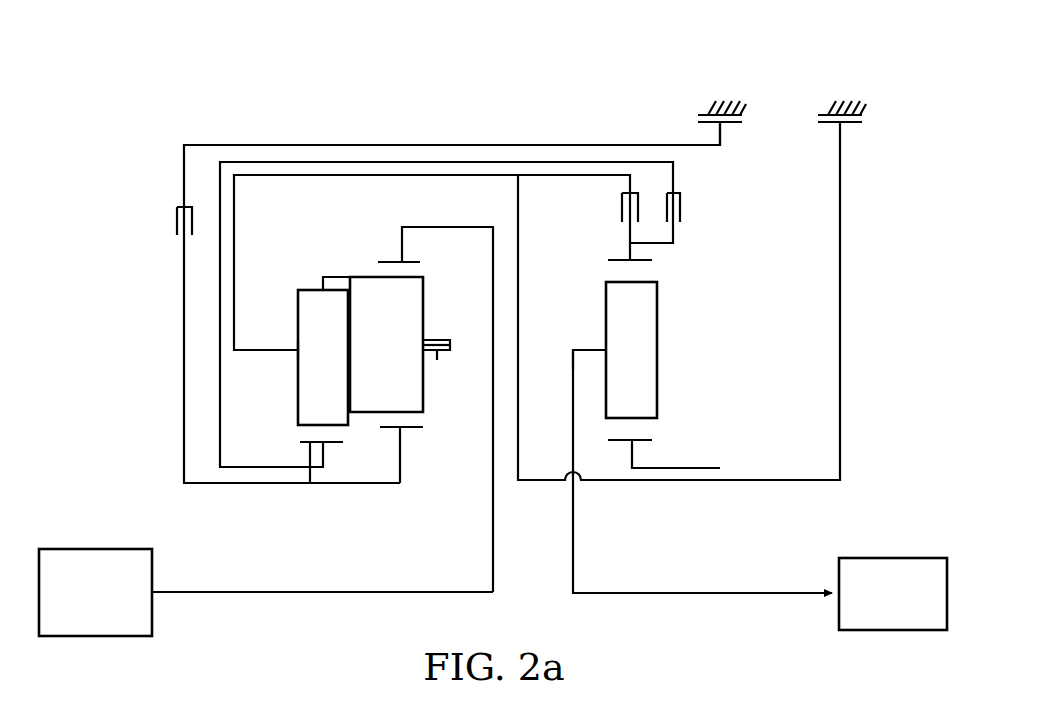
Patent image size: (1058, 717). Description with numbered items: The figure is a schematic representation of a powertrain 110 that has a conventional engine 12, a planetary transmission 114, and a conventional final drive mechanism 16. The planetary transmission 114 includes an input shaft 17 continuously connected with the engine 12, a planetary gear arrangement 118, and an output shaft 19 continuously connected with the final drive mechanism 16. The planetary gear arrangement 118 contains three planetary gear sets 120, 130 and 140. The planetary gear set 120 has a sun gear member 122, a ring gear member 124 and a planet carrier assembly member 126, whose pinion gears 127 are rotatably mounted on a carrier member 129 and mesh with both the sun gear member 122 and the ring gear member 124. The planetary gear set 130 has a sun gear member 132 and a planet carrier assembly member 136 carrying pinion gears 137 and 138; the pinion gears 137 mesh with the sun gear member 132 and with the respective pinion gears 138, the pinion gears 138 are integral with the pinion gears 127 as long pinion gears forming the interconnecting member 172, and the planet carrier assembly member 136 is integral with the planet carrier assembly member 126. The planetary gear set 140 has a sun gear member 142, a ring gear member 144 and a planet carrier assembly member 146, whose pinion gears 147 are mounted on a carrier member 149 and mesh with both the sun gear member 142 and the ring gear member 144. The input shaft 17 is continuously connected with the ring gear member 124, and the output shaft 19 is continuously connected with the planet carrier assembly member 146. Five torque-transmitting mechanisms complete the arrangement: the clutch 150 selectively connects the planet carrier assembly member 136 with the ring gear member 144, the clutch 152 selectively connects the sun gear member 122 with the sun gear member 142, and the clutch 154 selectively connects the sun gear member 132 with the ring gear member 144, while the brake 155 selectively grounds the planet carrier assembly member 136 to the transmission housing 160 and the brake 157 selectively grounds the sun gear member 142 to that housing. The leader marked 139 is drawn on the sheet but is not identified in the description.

The engine 12 is at (116, 528).
The final drive mechanism 16 is at (878, 526).
The input shaft 17 is at (190, 594).
The output shaft 19 is at (793, 595).
The powertrain 110 is at (146, 345).
The planetary transmission 114 is at (309, 86).
The planetary gear arrangement 118 is at (540, 86).
The planetary gear set 120 is at (411, 436).
The sun gear member 122 is at (416, 440).
The ring gear member 124 is at (400, 261).
The planet carrier assembly member 126 is at (440, 334).
The pinion gears 127 is at (386, 344).
The carrier member 129 is at (437, 360).
The planetary gear set 130 is at (338, 448).
The sun gear member 132 is at (308, 445).
The planet carrier assembly member 136 is at (290, 346).
The pinion gears 137 is at (323, 357).
The pinion gears 138 is at (322, 288).
The clutch connecting member 139 is at (285, 355).
The planetary gear set 140 is at (621, 446).
The sun gear member 142 is at (645, 441).
The ring gear member 144 is at (628, 258).
The planet carrier assembly member 146 is at (594, 344).
The pinion gears 147 is at (631, 350).
The carrier member 149 is at (586, 348).
The clutch 150 is at (619, 190).
The clutch 152 is at (171, 202).
The clutch 154 is at (664, 190).
The brake 155 is at (872, 116).
The brake 157 is at (748, 116).
The transmission housing 160 is at (710, 109).
The interconnecting member 172 is at (337, 276).